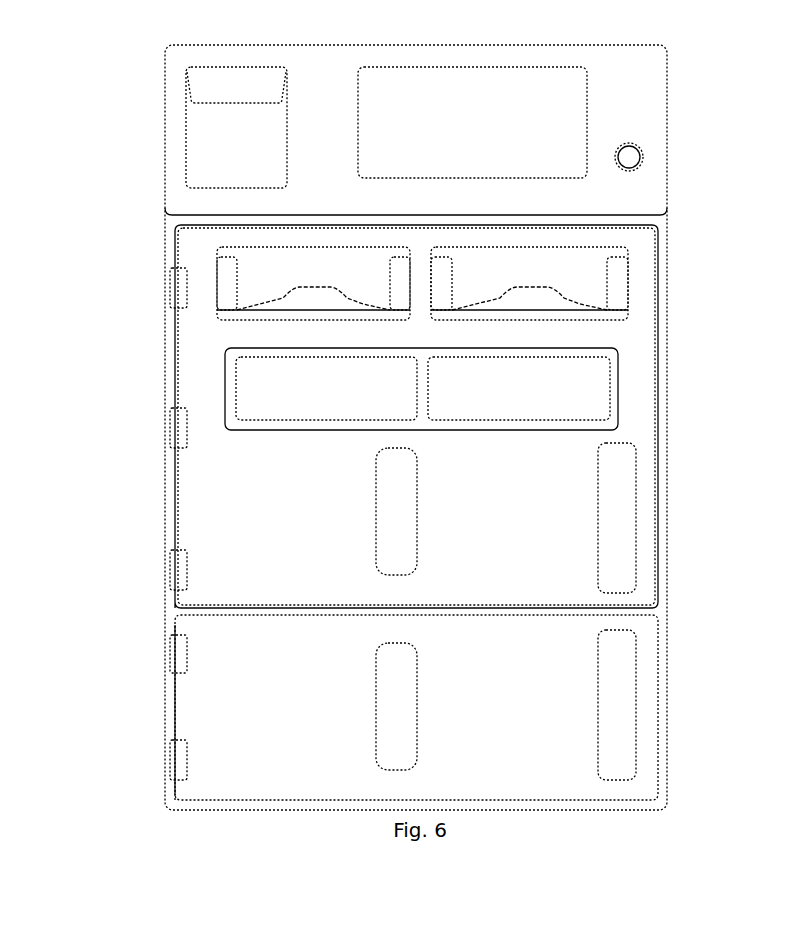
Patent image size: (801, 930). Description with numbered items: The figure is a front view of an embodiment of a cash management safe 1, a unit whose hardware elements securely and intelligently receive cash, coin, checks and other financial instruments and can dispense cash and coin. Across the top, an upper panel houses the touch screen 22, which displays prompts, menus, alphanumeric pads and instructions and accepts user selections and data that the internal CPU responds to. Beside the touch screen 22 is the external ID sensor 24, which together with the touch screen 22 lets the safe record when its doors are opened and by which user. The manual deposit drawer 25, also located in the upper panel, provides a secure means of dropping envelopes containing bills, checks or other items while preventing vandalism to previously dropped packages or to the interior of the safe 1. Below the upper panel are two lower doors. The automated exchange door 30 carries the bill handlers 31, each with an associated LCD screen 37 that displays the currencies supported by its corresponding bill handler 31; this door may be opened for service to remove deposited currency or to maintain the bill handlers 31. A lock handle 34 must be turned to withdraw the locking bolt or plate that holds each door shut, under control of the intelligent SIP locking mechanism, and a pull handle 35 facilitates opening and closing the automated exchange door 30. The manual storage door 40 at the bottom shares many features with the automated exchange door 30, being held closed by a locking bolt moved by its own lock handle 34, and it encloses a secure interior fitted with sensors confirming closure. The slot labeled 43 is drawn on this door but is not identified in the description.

The cash management safe 1 is at (672, 61).
The touch screen 22 is at (541, 120).
The external ID sensor 24 is at (643, 157).
The manual deposit drawer 25 is at (218, 139).
The automated exchange door 30 is at (642, 399).
The bill handler 31 is at (297, 309).
The lock handle 34 is at (376, 690).
The pull handle 35 is at (637, 503).
The LCD screen 37 is at (288, 383).
The manual storage door 40 is at (195, 710).
The lower side slot 43 is at (637, 678).